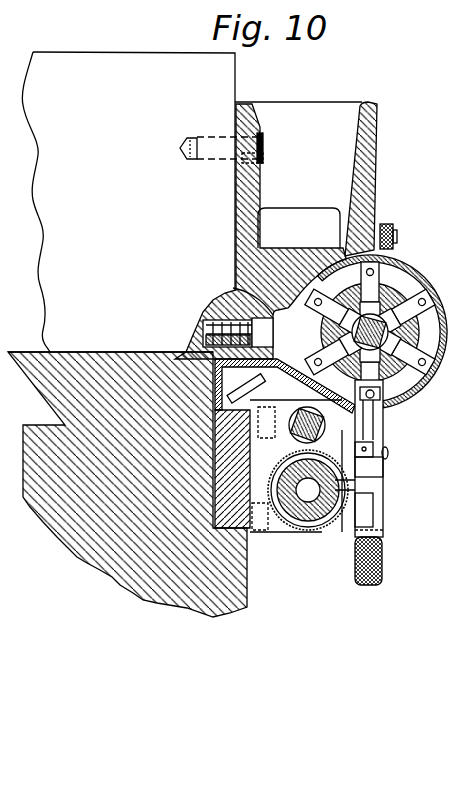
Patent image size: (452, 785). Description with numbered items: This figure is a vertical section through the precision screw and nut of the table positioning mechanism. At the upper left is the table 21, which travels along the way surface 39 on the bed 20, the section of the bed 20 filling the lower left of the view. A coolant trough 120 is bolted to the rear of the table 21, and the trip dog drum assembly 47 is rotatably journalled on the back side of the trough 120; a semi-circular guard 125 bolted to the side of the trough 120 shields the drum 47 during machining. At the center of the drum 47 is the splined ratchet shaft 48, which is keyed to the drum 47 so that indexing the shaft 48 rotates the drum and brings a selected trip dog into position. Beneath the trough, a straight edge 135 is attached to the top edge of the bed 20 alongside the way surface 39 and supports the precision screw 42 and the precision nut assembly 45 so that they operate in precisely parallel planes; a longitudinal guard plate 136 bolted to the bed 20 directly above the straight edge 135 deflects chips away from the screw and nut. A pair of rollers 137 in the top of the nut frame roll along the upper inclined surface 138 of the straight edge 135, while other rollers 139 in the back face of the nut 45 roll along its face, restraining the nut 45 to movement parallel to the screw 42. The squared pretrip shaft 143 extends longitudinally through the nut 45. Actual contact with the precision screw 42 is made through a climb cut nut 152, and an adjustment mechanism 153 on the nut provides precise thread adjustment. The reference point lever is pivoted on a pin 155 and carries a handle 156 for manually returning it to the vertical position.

The bed 20 is at (90, 517).
The table 21 is at (78, 57).
The way surface 39 is at (88, 352).
The precision screw 42 is at (308, 513).
The precision nut assembly 45 is at (342, 430).
The drum assembly 47 is at (313, 340).
The splined ratchet shaft 48 is at (352, 330).
The coolant trough 120 is at (380, 115).
The semi-circular guard 125 is at (411, 404).
The straight edge 135 is at (247, 524).
The guard plate 136 is at (190, 358).
The rollers 137 is at (250, 376).
The upper inclined surface 138 is at (251, 389).
The rollers 139 is at (262, 470).
The pretrip shaft 143 is at (310, 408).
The climb cut nut 152 is at (319, 532).
The adjustment mechanism 153 is at (383, 480).
The pin 155 is at (388, 452).
The handle 156 is at (362, 590).